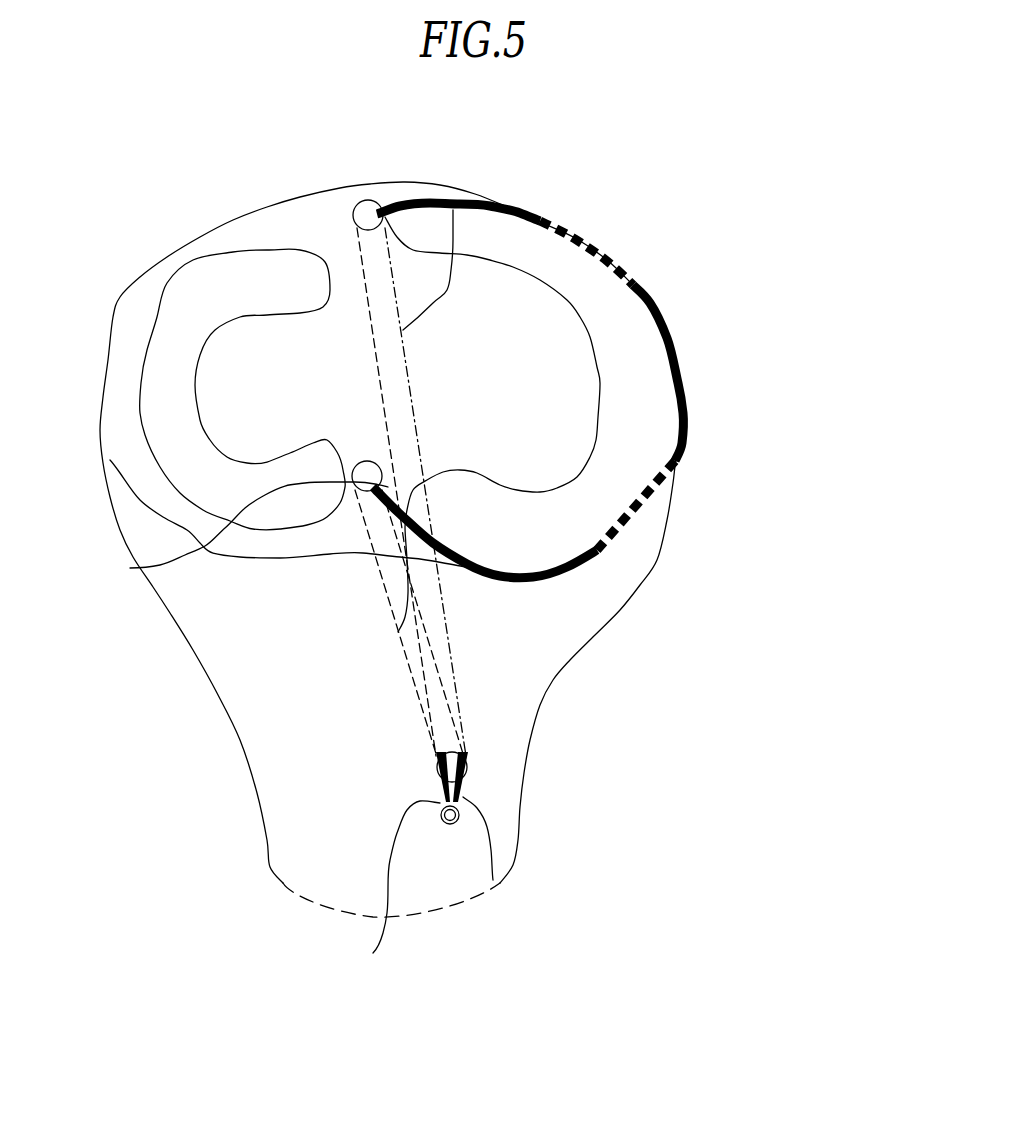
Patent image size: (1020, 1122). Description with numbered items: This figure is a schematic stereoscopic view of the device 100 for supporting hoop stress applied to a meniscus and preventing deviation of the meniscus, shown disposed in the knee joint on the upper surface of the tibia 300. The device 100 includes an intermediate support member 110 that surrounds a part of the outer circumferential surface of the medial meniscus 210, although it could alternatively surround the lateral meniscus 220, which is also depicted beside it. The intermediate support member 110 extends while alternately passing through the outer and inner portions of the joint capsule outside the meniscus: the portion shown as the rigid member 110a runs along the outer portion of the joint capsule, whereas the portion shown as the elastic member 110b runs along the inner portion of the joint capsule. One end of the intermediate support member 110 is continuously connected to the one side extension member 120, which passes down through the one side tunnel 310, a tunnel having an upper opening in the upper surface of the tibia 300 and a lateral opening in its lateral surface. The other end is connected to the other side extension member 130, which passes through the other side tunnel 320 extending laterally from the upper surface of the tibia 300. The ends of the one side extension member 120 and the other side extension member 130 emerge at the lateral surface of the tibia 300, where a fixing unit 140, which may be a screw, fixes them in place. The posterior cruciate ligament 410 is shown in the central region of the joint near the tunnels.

The device for supporting hoop stress applied to meniscus and preventing deviation o 100 is at (644, 390).
The intermediate support member 110 is at (756, 417).
The rigid member 110a is at (683, 390).
The elastic member 110b is at (640, 507).
The one side extension member 120 is at (130, 568).
The other side extension member 130 is at (373, 200).
The fixing unit 140 is at (455, 827).
The medial meniscus 210 is at (578, 544).
The lateral meniscus 220 is at (230, 278).
The tibia 300 is at (120, 288).
The one side tunnel 310 is at (385, 588).
The other side tunnel 320 is at (453, 210).
The posterior cruciate ligament 410 is at (410, 492).